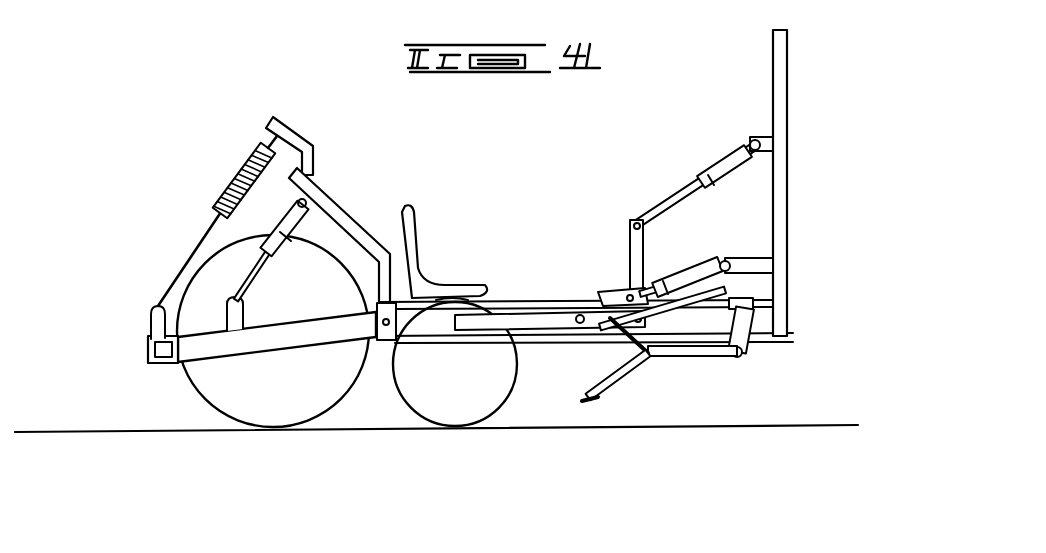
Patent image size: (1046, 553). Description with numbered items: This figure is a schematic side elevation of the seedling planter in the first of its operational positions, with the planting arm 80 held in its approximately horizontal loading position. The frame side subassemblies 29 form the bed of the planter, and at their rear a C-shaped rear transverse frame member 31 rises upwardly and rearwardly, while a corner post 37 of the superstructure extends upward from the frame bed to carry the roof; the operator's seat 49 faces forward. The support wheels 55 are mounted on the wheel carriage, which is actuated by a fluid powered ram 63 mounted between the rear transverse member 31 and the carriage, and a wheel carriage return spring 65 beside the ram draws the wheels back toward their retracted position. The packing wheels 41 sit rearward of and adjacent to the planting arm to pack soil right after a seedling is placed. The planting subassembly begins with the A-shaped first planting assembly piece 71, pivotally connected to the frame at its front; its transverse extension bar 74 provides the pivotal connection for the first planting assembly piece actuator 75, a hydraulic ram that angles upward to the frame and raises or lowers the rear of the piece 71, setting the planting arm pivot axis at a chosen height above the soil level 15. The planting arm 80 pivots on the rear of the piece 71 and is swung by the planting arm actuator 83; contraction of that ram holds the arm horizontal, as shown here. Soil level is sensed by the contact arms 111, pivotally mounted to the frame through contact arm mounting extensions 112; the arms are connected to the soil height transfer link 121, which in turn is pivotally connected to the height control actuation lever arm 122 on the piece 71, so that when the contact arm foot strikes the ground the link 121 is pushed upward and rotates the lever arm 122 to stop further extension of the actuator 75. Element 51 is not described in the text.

The soil level 15 is at (810, 425).
The frame side subassembly 29 is at (582, 400).
The rear transverse frame member 31 is at (337, 207).
The corner post 37 is at (788, 62).
The packing wheel 41 is at (457, 403).
The operator's seat 49 is at (413, 245).
The pivot bracket 51 is at (142, 349).
The support wheel 55 is at (207, 387).
The fluid powered ram 63 is at (292, 220).
The wheel carriage return spring 65 is at (245, 172).
The first planting assembly piece 71 is at (707, 320).
The transverse extension bar 74 is at (627, 248).
The first planting assembly piece actuator 75 is at (715, 160).
The planting arm 80 is at (522, 305).
The planting arm actuator 83 is at (680, 273).
The contact arm 111 is at (633, 375).
The contact arm mounting extension 112 is at (757, 352).
The soil height transfer link 121 is at (627, 350).
The height control actuation lever arm 122 is at (737, 298).